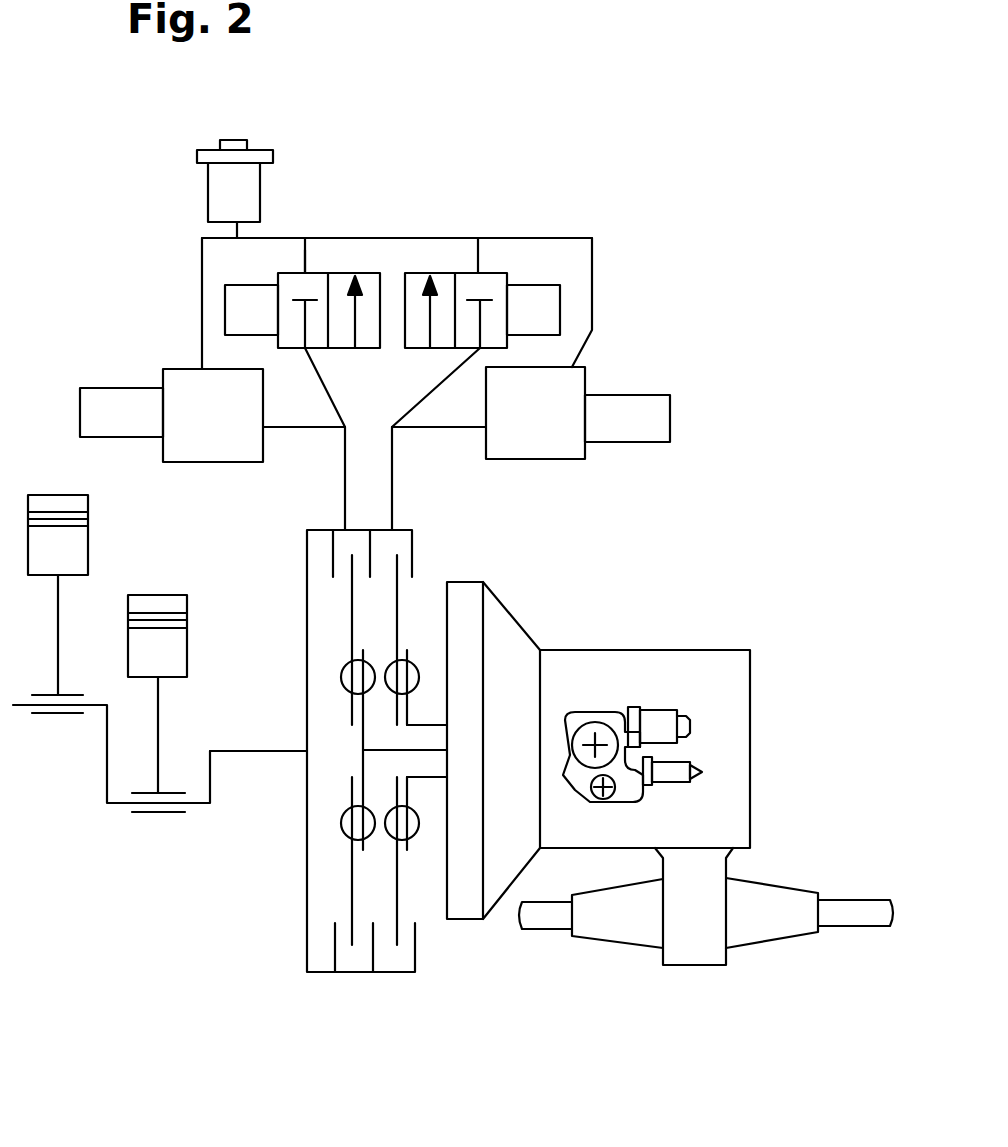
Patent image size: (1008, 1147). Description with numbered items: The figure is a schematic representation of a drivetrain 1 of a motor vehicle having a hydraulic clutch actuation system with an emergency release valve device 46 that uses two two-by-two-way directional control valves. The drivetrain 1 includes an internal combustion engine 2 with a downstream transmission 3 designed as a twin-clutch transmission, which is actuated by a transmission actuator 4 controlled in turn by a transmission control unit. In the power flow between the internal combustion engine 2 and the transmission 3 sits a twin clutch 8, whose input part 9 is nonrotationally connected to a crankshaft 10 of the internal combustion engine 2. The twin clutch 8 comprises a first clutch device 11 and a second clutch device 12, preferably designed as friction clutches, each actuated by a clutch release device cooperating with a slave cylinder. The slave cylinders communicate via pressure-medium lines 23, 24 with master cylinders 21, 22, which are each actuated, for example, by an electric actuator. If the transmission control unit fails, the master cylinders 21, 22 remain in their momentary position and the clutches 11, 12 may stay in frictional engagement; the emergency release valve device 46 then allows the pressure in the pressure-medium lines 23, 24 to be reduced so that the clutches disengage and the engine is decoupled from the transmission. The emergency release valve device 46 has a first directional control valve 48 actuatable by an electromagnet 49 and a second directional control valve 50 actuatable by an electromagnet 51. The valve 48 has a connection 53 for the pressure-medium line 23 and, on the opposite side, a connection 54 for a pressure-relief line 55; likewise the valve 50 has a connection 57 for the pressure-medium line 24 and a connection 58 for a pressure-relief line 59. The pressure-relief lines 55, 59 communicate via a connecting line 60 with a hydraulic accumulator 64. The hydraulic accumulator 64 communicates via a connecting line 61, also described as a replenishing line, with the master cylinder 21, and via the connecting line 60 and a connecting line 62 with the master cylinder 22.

The drivetrain 1 is at (262, 937).
The internal combustion engine 2 is at (140, 827).
The transmission 3 is at (523, 617).
The transmission actuator 4 is at (658, 717).
The twin clutch 8 is at (348, 978).
The input part 9 is at (295, 730).
The crankshaft 10 is at (275, 762).
The first clutch device 11 is at (328, 978).
The second clutch device 12 is at (402, 978).
The master cylinder 21 is at (214, 447).
The master cylinder 22 is at (542, 445).
The pressure-medium line 23 is at (345, 494).
The pressure-medium line 24 is at (392, 494).
The emergency release valve device 46 is at (418, 232).
The first 2/2-way directional control valve 48 is at (368, 278).
The electromagnet 49 is at (240, 302).
The second 2/2-way directional control valve 50 is at (497, 280).
The electromagnet 51 is at (545, 312).
The connection 53 is at (317, 352).
The connection 54 is at (298, 260).
The pressure-relief line 55 is at (307, 250).
The connection 57 is at (483, 350).
The connection 58 is at (472, 263).
The pressure-relief line 59 is at (480, 248).
The connecting line 60 is at (303, 237).
The connecting line 61 is at (202, 340).
The connecting line 62 is at (593, 282).
The hydraulic accumulator 64 is at (222, 185).